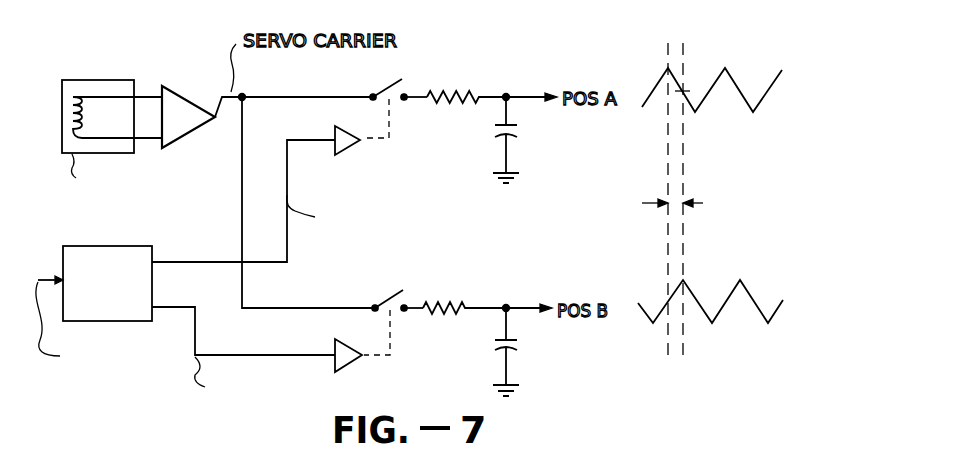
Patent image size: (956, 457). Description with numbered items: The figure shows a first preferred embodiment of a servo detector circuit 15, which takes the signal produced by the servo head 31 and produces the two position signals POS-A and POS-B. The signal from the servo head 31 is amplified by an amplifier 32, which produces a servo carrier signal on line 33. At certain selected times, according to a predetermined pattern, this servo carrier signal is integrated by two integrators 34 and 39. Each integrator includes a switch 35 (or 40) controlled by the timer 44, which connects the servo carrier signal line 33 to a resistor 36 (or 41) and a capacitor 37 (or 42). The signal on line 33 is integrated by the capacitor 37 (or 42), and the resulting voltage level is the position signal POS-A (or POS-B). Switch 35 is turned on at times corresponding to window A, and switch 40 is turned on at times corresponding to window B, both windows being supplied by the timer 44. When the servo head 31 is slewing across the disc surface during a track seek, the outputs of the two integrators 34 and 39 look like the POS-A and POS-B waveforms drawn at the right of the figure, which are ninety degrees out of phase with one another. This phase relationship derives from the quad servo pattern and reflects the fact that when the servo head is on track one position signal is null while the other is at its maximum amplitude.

The servo detector circuit 15 is at (592, 47).
The servo head 31 is at (98, 80).
The amplifier 32 is at (189, 98).
The servo carrier signal line 33 is at (242, 115).
The integrator 34 is at (442, 143).
The switch 35 is at (392, 85).
The resistor 36 is at (454, 90).
The capacitor 37 is at (515, 128).
The integrator 39 is at (448, 345).
The switch 40 is at (393, 297).
The resistor 41 is at (462, 307).
The capacitor 42 is at (517, 343).
The timer 44 is at (132, 246).